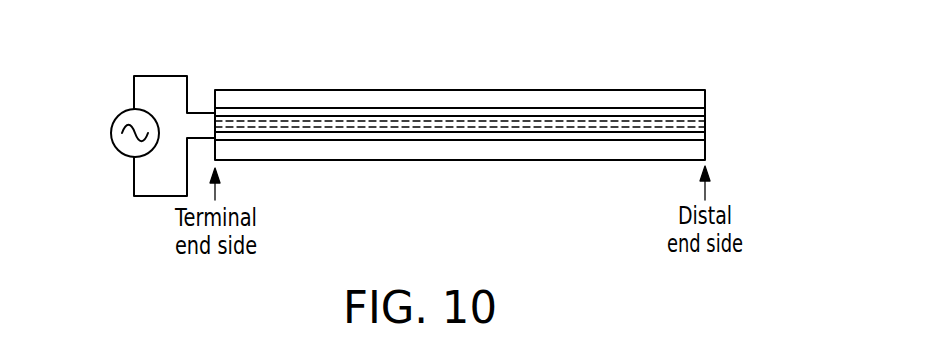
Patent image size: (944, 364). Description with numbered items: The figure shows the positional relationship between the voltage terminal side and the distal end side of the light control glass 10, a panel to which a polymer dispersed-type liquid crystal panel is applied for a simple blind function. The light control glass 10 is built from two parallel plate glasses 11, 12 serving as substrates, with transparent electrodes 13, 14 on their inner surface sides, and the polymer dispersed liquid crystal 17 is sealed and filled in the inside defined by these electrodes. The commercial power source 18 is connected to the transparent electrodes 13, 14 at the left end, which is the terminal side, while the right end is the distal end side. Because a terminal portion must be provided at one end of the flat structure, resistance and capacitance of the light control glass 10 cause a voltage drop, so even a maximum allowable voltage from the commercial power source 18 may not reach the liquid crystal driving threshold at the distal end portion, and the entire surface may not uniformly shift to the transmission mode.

The light control glass 10 is at (630, 65).
The plate glass 11 is at (458, 98).
The plate glass 12 is at (458, 150).
The transparent electrode 13 is at (370, 112).
The transparent electrode 14 is at (375, 134).
The polymer dispersed liquid crystal 17 is at (706, 121).
The commercial power source 18 is at (111, 133).